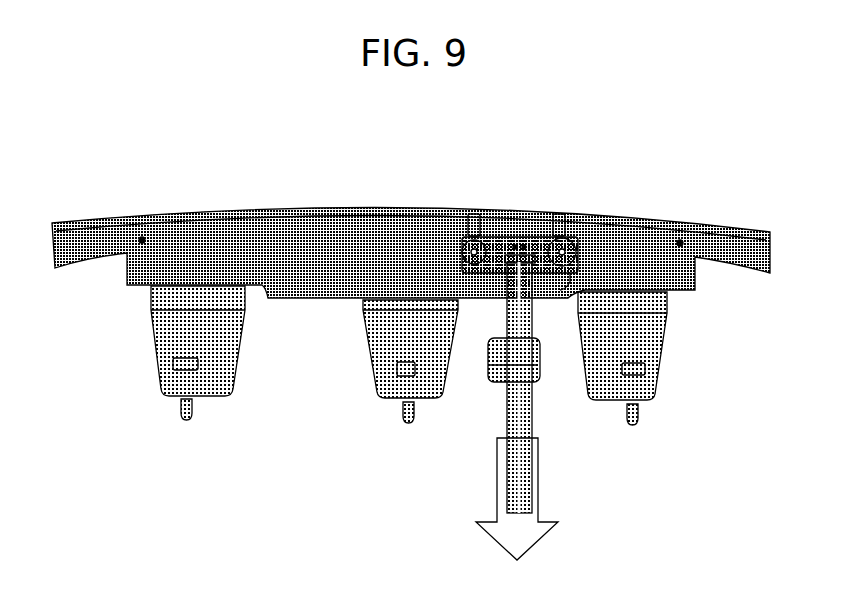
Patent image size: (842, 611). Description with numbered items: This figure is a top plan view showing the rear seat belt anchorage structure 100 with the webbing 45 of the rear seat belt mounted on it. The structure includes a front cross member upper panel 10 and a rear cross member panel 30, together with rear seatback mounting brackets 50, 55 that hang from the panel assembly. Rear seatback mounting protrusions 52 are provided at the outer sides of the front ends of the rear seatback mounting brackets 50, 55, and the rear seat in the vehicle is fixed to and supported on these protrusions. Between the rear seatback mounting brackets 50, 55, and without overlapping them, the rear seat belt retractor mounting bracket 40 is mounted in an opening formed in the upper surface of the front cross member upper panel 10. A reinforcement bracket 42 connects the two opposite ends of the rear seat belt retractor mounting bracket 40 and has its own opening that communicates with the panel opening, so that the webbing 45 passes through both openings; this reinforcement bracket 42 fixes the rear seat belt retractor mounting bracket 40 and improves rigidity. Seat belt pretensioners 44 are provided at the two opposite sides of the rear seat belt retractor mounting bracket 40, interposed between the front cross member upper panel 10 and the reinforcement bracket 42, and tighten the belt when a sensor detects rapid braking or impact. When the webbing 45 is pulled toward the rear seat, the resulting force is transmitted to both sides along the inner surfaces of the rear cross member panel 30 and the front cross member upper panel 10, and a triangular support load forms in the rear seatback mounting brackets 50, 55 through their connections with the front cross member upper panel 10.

The rear seat belt anchorage structure 100 is at (429, 126).
The front cross member upper panel 10 is at (447, 205).
The rear cross member panel 30 is at (382, 205).
The rear seat belt retractor mounting bracket 40 is at (515, 222).
The reinforcement bracket 42 is at (497, 225).
The seat belt pretensioners 44 is at (552, 222).
The webbing 45 is at (533, 418).
The rear seatback mounting bracket 50 is at (662, 362).
The rear seatback mounting protrusions 52 is at (402, 417).
The rear seatback mounting bracket 55 is at (372, 362).